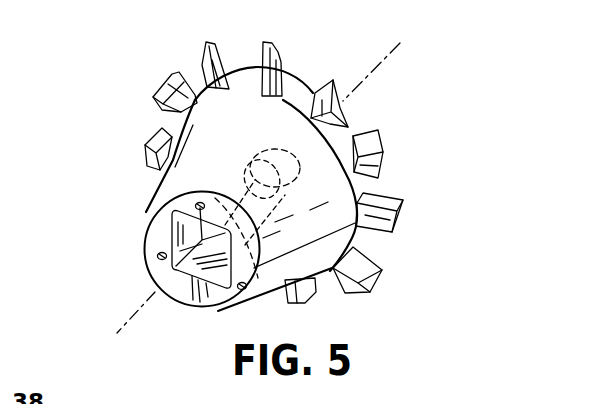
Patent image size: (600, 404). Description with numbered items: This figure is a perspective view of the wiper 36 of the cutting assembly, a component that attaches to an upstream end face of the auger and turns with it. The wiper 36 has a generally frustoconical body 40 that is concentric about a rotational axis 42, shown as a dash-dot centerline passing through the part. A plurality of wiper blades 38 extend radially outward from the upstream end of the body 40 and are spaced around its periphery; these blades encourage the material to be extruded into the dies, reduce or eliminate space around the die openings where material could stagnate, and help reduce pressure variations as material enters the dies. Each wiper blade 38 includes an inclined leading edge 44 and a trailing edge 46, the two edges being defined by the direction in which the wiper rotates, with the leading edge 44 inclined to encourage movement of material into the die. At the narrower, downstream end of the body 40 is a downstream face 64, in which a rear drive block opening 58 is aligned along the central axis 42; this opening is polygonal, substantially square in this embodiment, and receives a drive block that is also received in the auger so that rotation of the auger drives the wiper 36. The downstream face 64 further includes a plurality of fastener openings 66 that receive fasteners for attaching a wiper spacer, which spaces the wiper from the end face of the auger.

The wiper 36 is at (393, 177).
The wiper blades 38 is at (210, 50).
The frustoconical body 40 is at (165, 178).
The rotational axis 42 is at (133, 320).
The leading edge 44 is at (173, 75).
The trailing edge 46 is at (364, 124).
The drive block opening 58 is at (172, 230).
The downstream face 64 is at (153, 218).
The fastener openings 66 is at (172, 266).